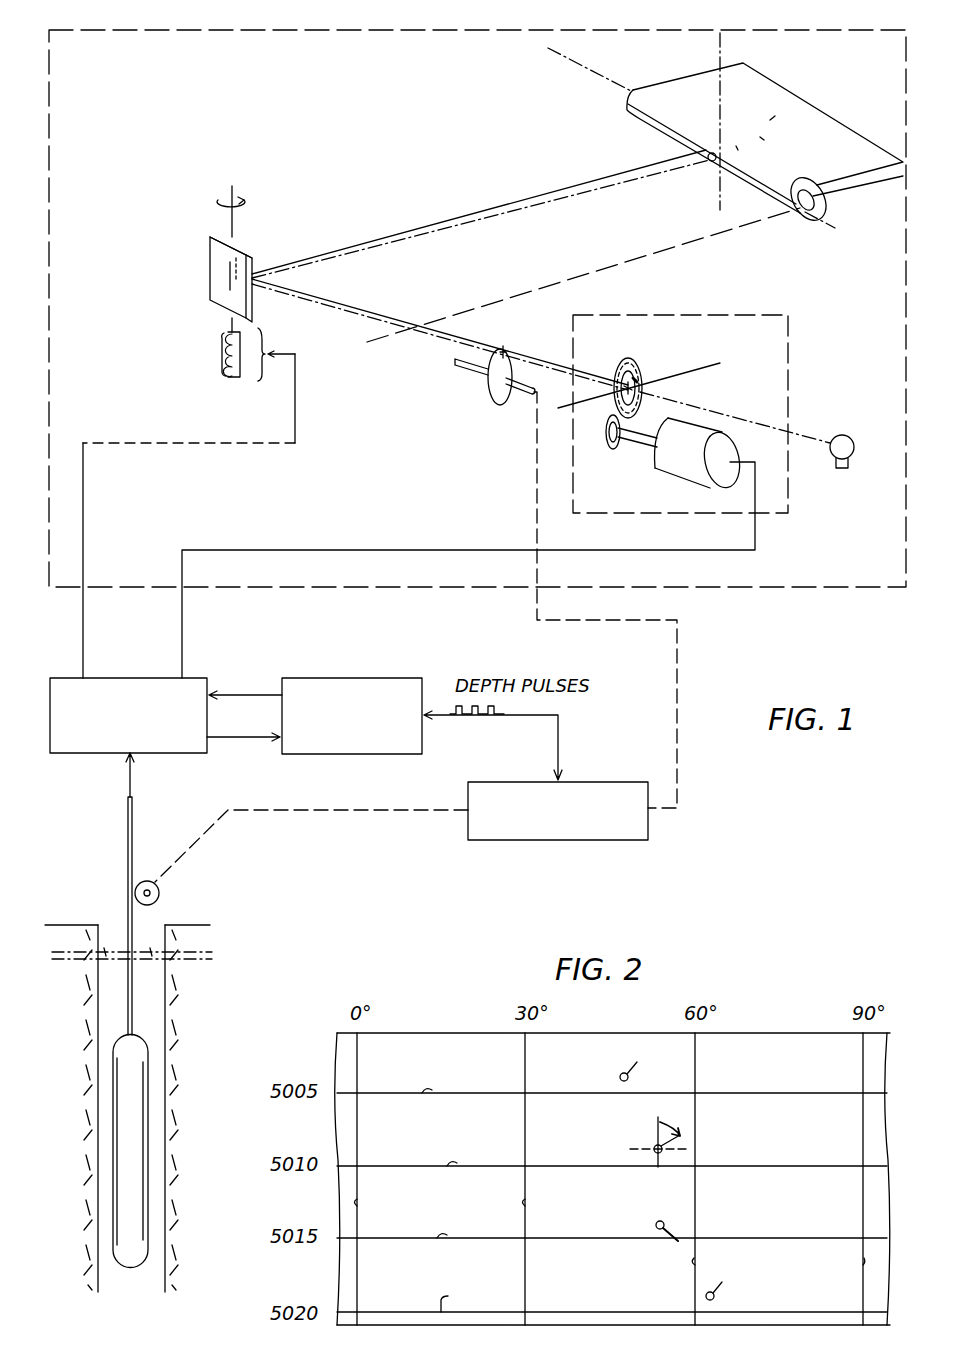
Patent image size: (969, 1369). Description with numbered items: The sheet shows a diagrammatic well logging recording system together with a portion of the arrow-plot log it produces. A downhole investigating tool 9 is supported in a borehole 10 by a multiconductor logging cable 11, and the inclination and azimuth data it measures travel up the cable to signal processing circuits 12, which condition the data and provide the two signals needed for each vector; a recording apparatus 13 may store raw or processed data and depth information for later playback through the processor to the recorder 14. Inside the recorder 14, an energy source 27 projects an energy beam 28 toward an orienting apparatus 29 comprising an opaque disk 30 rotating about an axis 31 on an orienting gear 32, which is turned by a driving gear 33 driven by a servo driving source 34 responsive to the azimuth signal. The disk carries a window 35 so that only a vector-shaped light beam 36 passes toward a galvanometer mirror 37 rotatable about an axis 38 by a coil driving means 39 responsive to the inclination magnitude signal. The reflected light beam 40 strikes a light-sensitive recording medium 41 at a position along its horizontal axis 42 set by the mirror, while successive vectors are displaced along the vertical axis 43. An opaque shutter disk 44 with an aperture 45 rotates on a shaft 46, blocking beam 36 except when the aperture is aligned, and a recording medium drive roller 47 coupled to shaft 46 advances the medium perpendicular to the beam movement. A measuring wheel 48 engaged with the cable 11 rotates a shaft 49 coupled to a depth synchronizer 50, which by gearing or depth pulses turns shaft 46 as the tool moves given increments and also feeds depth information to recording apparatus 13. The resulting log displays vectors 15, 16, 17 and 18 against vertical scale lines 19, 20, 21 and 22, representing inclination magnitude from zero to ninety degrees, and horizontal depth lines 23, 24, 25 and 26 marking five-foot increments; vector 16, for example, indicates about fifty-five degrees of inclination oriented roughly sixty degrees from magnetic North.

In FIG. 1, the downhole investigating tool 9 is at (140, 1165).
In FIG. 1, the borehole 10 is at (160, 996).
In FIG. 1, the multiconductor logging cable 11 is at (110, 894).
In FIG. 1, the signal processing circuits 12 is at (76, 756).
In FIG. 1, the recording apparatus 13 is at (372, 678).
In FIG. 1, the recorder 14 is at (122, 74).
In FIG. 1, the vector 15 is at (774, 118).
In FIG. 2, the vector 15 is at (636, 1072).
In FIG. 1, the vector 16 is at (768, 140).
In FIG. 2, the vector 16 is at (682, 1142).
In FIG. 1, the vector 17 is at (738, 146).
In FIG. 2, the vector 17 is at (668, 1224).
In FIG. 1, the vector 18 is at (712, 163).
In FIG. 2, the vector 18 is at (720, 1293).
In FIG. 2, the vertical scale line 19 is at (360, 1204).
In FIG. 2, the vertical scale line 20 is at (528, 1204).
In FIG. 2, the vertical scale line 21 is at (697, 1263).
In FIG. 2, the vertical scale line 22 is at (839, 1261).
In FIG. 2, the depth line 23 is at (432, 1092).
In FIG. 2, the depth line 24 is at (456, 1166).
In FIG. 2, the depth line 25 is at (446, 1238).
In FIG. 2, the depth line 26 is at (461, 1297).
In FIG. 1, the energy source 27 is at (856, 440).
In FIG. 1, the energy beam 28 is at (744, 412).
In FIG. 1, the orienting apparatus 29 is at (746, 314).
In FIG. 1, the disk 30 is at (622, 372).
In FIG. 1, the axis 31 is at (564, 408).
In FIG. 1, the orienting gear 32 is at (636, 368).
In FIG. 1, the driving gear 33 is at (612, 450).
In FIG. 1, the driving source 34 is at (678, 472).
In FIG. 1, the window 35 is at (660, 394).
In FIG. 1, the light beam 36 is at (366, 310).
In FIG. 1, the mirror 37 is at (214, 277).
In FIG. 1, the axis 38 is at (236, 222).
In FIG. 1, the driving means 39 is at (244, 378).
In FIG. 1, the light beam 40 is at (472, 215).
In FIG. 1, the recording medium 41 is at (805, 106).
In FIG. 1, the horizontal axis 42 is at (553, 52).
In FIG. 1, the vertical axis 43 is at (722, 48).
In FIG. 1, the shutter disk 44 is at (494, 392).
In FIG. 1, the aperture 45 is at (506, 352).
In FIG. 1, the shaft 46 is at (458, 372).
In FIG. 1, the recording medium drive roller 47 is at (805, 214).
In FIG. 1, the measuring wheel 48 is at (162, 896).
In FIG. 1, the shaft 49 is at (186, 872).
In FIG. 1, the depth synchronizer 50 is at (612, 782).